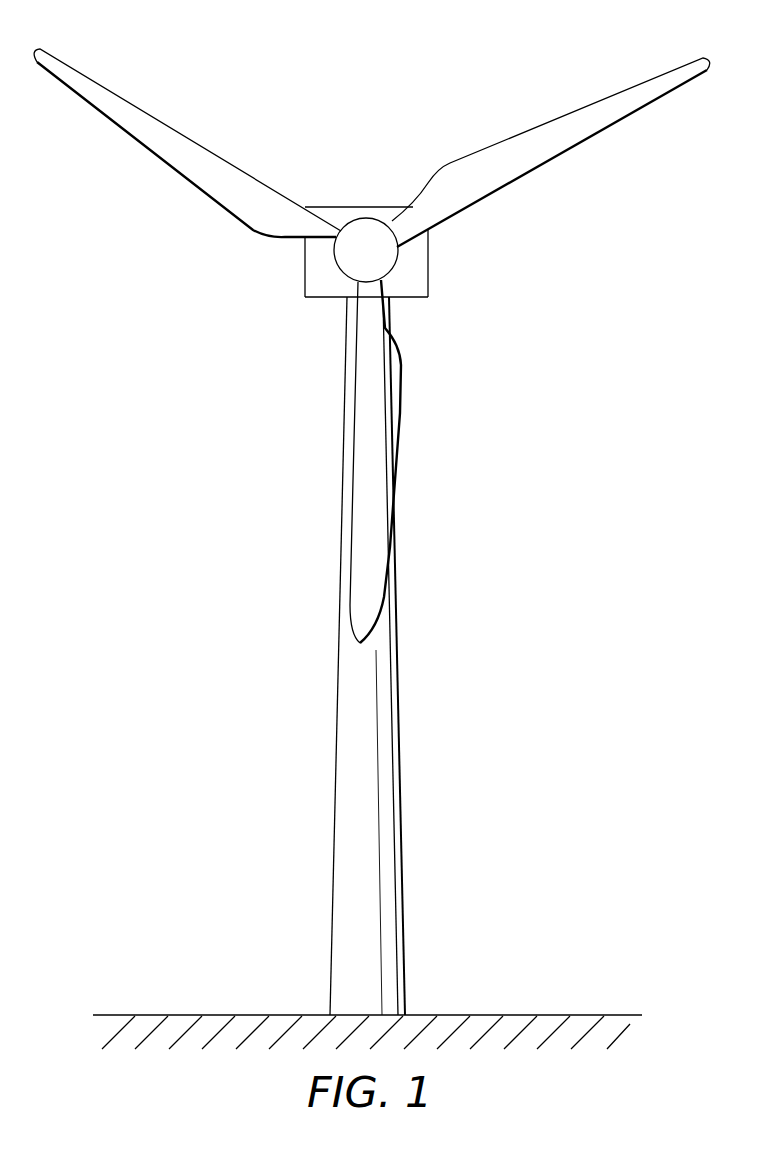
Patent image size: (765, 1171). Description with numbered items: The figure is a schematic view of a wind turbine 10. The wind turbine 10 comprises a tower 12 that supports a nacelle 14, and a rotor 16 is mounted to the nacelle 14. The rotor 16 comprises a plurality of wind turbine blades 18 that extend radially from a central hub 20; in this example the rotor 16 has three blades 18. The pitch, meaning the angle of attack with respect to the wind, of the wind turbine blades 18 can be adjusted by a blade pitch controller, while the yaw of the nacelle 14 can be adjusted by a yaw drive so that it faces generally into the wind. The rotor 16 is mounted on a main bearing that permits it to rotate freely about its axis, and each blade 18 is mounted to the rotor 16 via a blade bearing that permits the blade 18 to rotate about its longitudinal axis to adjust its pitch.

The wind turbine 10 is at (176, 644).
The tower 12 is at (402, 800).
The nacelle 14 is at (430, 280).
The rotor 16 is at (236, 293).
The wind turbine blades 18 is at (637, 70).
The central hub 20 is at (366, 217).